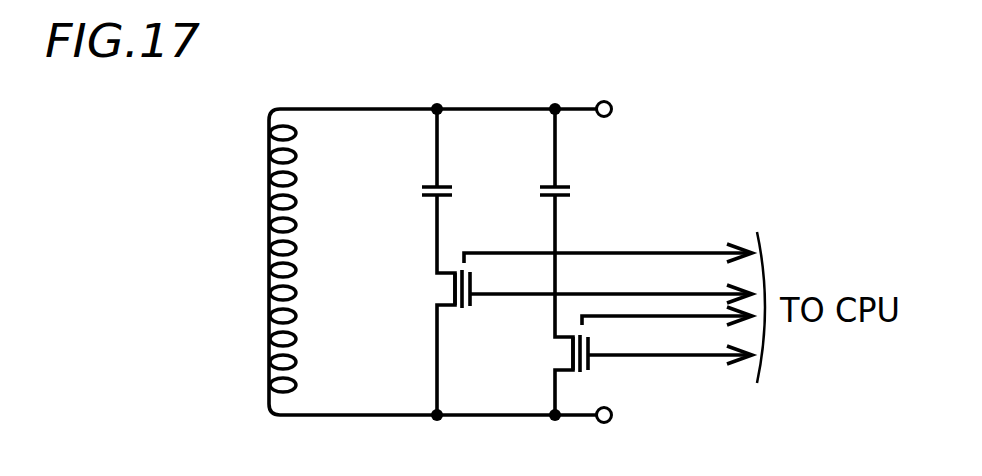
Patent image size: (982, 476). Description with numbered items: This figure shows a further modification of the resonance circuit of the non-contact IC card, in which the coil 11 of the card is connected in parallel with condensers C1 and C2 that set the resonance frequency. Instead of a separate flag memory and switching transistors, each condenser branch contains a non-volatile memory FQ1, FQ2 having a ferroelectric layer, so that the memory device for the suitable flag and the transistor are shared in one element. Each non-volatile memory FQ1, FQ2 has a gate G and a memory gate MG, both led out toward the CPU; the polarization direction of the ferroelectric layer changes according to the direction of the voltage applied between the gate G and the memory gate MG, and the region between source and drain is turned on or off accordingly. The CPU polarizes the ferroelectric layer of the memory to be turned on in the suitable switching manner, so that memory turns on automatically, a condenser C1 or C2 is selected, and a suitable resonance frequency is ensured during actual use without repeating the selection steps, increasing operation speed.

The antenna coil 11 is at (265, 263).
The capacitor C1 is at (428, 184).
The capacitor C2 is at (547, 184).
The non-volatile memory FQ1 is at (443, 292).
The non-volatile memory FQ2 is at (560, 356).
The memory gate MG is at (620, 252).
The gate G is at (620, 294).